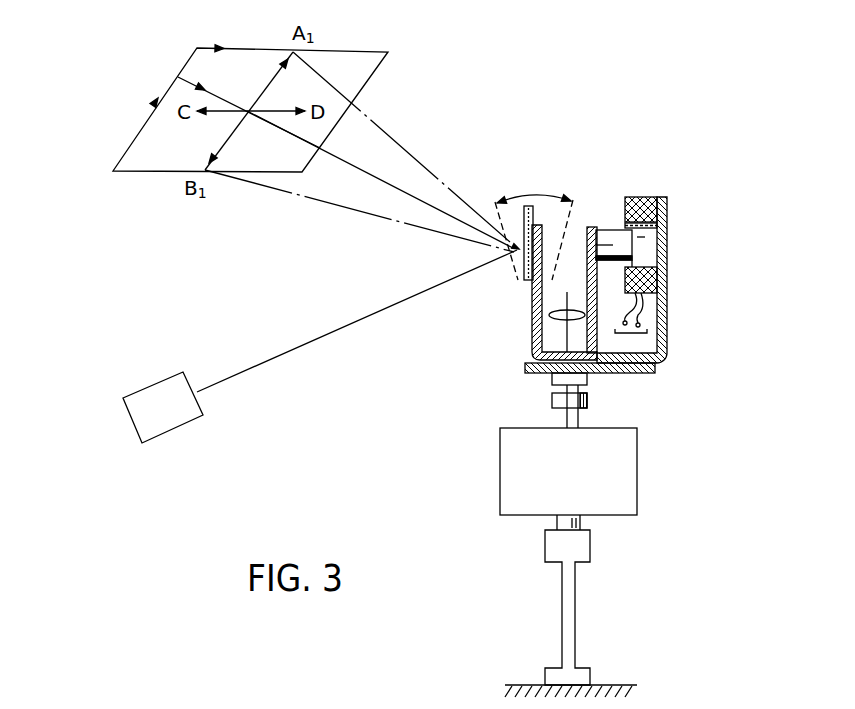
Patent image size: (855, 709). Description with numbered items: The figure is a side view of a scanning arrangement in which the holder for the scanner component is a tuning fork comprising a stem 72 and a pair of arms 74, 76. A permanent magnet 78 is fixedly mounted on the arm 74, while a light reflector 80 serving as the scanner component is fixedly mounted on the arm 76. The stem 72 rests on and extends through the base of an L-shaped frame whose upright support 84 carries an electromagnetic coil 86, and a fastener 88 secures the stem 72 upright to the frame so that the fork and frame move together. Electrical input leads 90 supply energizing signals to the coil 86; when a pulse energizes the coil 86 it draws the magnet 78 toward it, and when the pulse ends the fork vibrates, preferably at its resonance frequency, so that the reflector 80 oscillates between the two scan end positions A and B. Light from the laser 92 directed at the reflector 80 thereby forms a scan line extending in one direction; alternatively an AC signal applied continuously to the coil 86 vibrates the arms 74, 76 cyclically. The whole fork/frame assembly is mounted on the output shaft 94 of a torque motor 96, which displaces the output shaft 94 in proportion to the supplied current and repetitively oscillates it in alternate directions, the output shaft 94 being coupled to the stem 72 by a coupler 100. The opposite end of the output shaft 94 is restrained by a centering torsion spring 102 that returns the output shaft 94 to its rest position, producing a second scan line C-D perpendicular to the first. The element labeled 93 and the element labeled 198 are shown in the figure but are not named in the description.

The stem 72 is at (562, 390).
The arm 74 is at (590, 227).
The arm 76 is at (533, 325).
The permanent magnet 78 is at (612, 233).
The light reflector 80 is at (528, 204).
The upright support 84 is at (667, 210).
The electromagnetic coil 86 is at (640, 197).
The fastener 88 is at (588, 383).
The electrical input leads 90 is at (631, 326).
The laser 92 is at (197, 420).
The pole piece 93 is at (648, 235).
The output shaft 94 is at (565, 418).
The motor 96 is at (630, 478).
The coupler 100 is at (588, 400).
The centering torsion spring 102 is at (578, 606).
The pivot shaft 198 is at (567, 300).